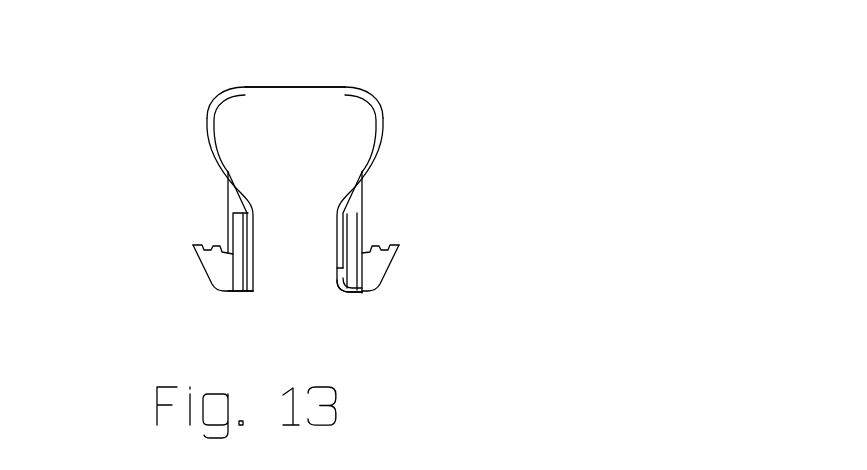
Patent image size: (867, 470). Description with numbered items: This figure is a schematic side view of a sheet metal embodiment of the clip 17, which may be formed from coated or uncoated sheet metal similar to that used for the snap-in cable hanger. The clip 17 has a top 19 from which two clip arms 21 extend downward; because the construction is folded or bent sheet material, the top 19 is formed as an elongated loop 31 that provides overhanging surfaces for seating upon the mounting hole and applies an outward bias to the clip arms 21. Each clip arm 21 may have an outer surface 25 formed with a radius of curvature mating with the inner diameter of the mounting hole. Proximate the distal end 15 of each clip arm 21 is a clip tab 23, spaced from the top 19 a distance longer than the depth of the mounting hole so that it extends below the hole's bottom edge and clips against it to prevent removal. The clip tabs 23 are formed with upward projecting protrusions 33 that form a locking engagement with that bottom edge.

The distal end 15 is at (352, 297).
The clip 17 is at (193, 167).
The top 19 is at (297, 88).
The clip arm 21 is at (95, 365).
The clip tab 23 is at (102, 250).
The outer surface 25 is at (353, 220).
The elongated loop 31 is at (208, 115).
The upward projecting protrusion 33 is at (362, 253).